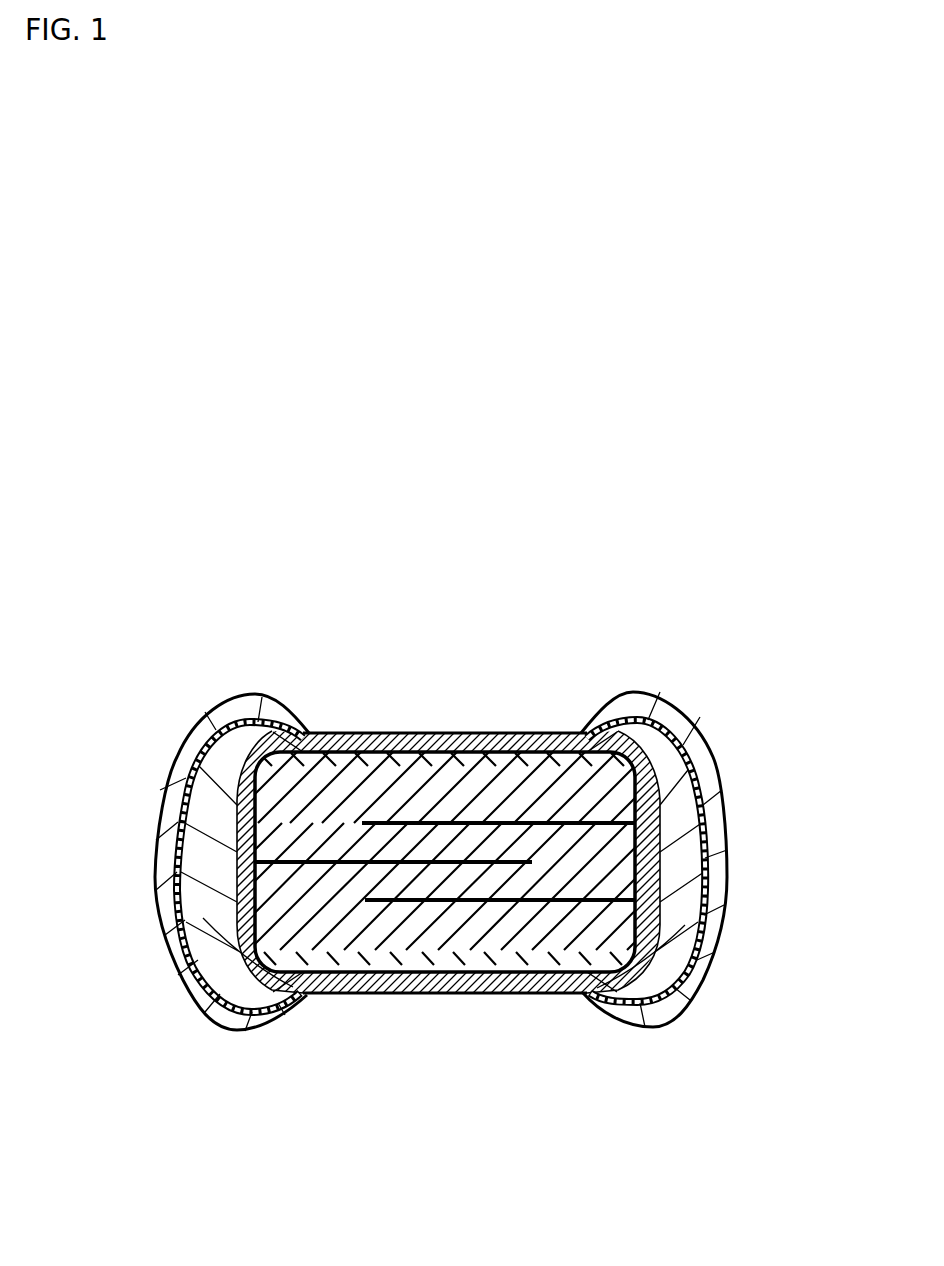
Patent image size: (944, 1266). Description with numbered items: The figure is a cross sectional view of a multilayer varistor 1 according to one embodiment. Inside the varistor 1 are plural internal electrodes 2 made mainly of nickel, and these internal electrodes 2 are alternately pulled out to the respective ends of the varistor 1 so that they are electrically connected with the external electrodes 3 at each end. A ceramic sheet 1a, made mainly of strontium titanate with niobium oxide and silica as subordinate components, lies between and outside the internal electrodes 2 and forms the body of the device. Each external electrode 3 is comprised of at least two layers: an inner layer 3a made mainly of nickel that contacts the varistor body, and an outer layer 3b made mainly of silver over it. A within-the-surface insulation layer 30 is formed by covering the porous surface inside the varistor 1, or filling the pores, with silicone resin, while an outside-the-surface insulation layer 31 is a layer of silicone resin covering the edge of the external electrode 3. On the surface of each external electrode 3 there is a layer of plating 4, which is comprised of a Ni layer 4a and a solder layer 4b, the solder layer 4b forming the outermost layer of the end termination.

The varistor 1 is at (465, 943).
The ceramic sheet 1a is at (428, 917).
The internal electrodes 2 is at (433, 823).
The external electrode 3 is at (472, 837).
The inner layer 3a is at (660, 798).
The outer layer 3b is at (660, 710).
The plating 4 is at (437, 816).
The Ni layer 4a is at (700, 922).
The solder layer 4b is at (712, 977).
The within-the-surface insulation layer 30 is at (358, 737).
The outside-the-surface insulation layer 31 is at (518, 737).